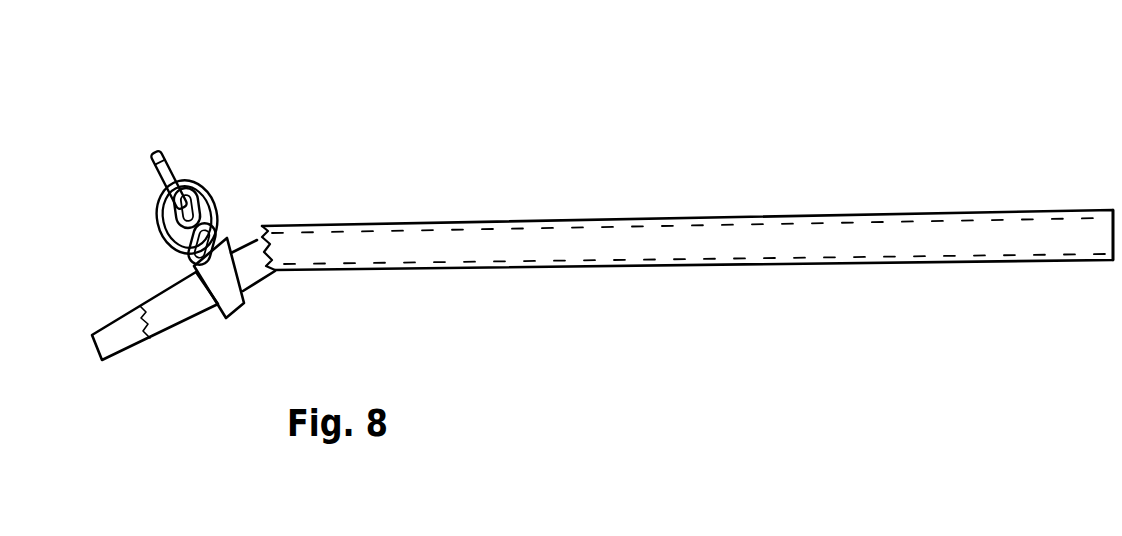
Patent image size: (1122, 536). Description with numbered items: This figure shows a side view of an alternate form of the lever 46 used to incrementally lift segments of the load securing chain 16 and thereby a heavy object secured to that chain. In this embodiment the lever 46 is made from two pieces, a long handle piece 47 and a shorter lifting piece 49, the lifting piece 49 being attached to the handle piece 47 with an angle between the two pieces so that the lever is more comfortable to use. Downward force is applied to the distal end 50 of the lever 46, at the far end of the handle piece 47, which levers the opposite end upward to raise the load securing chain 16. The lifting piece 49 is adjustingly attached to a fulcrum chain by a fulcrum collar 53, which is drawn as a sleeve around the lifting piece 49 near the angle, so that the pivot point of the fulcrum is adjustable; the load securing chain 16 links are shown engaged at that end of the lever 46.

The load securing chain 16 is at (201, 186).
The lever 46 is at (652, 245).
The handle piece 47 is at (743, 237).
The lifting piece 49 is at (173, 310).
The distal end 50 is at (1065, 228).
The fulcrum collar 53 is at (223, 278).